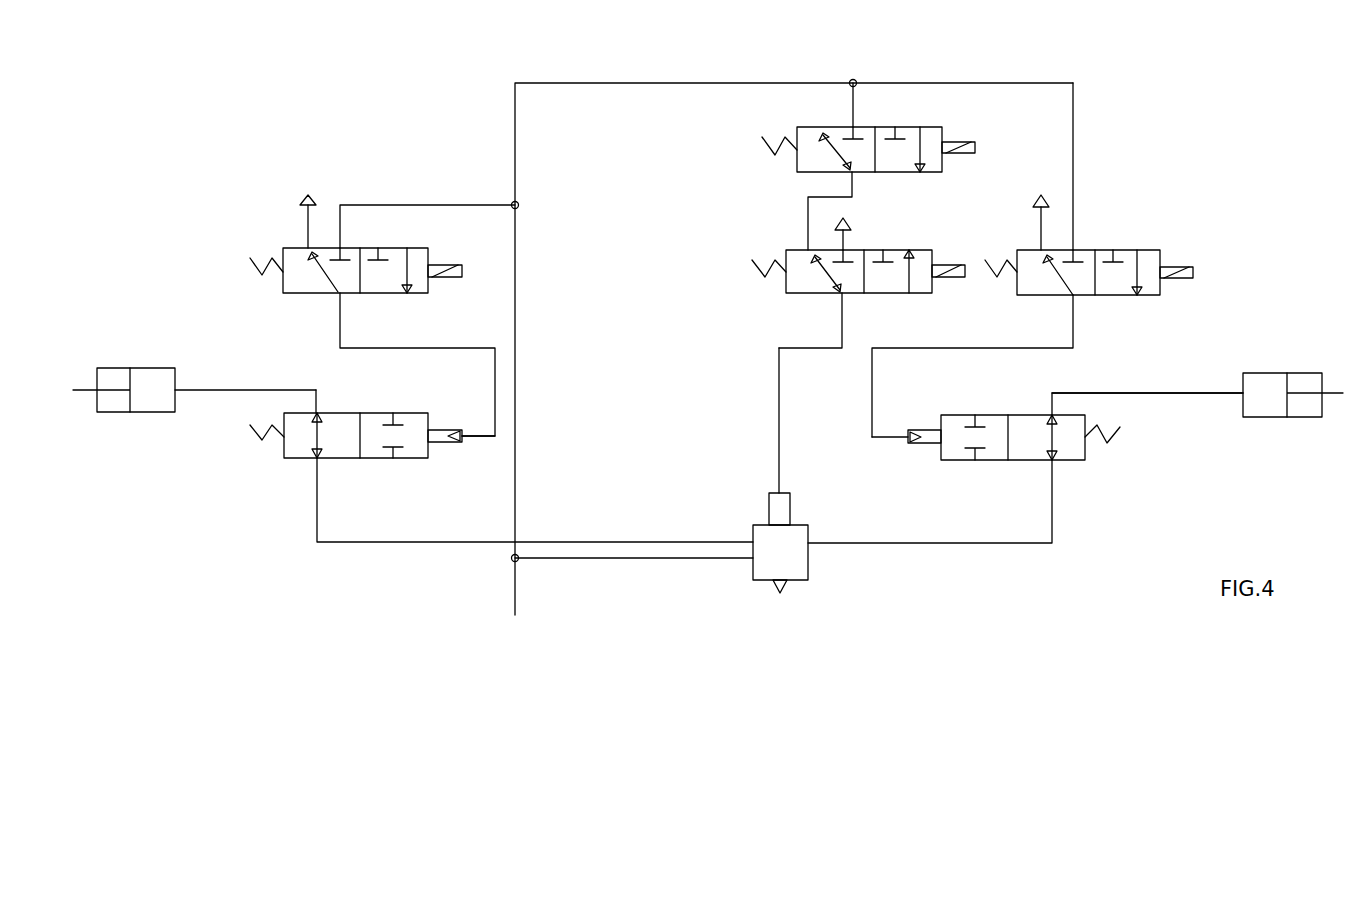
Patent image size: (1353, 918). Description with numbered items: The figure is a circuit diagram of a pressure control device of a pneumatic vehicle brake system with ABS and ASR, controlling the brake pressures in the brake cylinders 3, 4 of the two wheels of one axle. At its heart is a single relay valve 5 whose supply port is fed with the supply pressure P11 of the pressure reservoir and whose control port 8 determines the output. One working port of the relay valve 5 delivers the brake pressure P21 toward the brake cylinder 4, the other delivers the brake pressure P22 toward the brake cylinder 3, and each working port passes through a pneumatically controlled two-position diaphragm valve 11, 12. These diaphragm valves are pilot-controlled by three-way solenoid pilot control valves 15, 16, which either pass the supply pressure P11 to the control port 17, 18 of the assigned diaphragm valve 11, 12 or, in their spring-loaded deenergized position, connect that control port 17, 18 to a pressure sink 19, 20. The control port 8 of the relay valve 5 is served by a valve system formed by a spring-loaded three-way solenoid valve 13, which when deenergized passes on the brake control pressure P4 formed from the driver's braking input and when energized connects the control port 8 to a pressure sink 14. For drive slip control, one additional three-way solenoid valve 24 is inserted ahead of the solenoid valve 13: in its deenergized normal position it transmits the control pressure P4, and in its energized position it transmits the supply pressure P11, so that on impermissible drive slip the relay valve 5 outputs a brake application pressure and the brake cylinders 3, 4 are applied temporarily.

The brake cylinder 3 is at (1265, 378).
The brake cylinder 4 is at (155, 377).
The relay valve 5 is at (757, 530).
The control port 8 is at (785, 492).
The 2/2-way valve 11 is at (1023, 420).
The 2/2-way valve 12 is at (344, 452).
The 3/2-way solenoid valve 13 is at (800, 287).
The pressure sink 14 is at (849, 226).
The 3/2-way solenoid pilot control valve 15 is at (1123, 252).
The 3/2-way solenoid pilot control valve 16 is at (310, 290).
The control port 17 is at (910, 432).
The control port 18 is at (457, 430).
The pressure sink 19 is at (1041, 195).
The pressure sink 20 is at (312, 199).
The 3/2-way solenoid valve 24 is at (907, 135).
The brake control pressure P4 is at (822, 130).
The supply pressure P11 is at (786, 365).
The brake pressure P21 is at (535, 501).
The brake pressure P22 is at (930, 504).